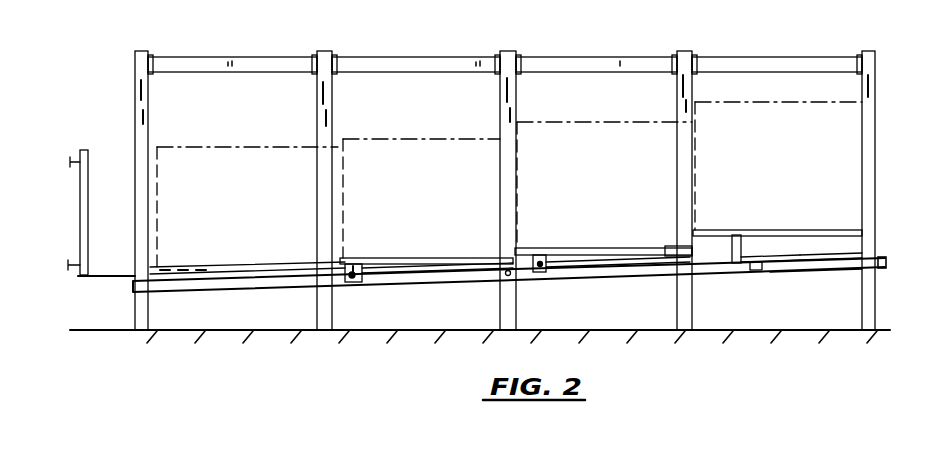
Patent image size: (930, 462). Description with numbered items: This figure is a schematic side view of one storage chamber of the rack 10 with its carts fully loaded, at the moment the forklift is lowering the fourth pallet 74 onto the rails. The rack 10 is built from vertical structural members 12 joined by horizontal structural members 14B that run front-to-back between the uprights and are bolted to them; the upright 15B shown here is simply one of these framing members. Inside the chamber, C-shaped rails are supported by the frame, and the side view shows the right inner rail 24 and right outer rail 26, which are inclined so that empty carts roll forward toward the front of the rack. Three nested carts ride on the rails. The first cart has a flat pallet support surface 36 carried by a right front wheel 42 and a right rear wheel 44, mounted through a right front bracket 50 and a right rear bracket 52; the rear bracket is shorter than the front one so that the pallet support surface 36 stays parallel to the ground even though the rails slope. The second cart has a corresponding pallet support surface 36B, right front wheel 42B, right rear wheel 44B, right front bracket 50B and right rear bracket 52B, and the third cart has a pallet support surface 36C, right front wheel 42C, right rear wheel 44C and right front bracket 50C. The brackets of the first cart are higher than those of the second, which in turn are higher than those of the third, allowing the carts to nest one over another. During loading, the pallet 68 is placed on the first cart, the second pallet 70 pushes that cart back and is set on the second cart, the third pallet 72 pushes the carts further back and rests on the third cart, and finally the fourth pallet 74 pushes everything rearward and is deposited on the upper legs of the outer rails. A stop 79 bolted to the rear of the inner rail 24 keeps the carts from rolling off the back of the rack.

The rack 10 is at (517, 19).
The vertical structural member 12 is at (135, 97).
The horizontal structural member 14B is at (233, 41).
The intermediate post 15B is at (317, 52).
The right inner rail 24 is at (805, 272).
The right outer rail 26 is at (755, 271).
The pallet support surface 36 is at (806, 211).
The pallet support surface 36B is at (592, 226).
The pallet support surface 36C is at (416, 226).
The right front wheel 42 is at (727, 266).
The right front wheel 42B is at (551, 283).
The right front wheel 42C is at (347, 283).
The right rear wheel 44 is at (848, 266).
The right rear wheel 44B is at (650, 282).
The right rear wheel 44C is at (488, 278).
The right front bracket 50 is at (745, 244).
The right front bracket 50B is at (548, 273).
The right front bracket 50C is at (362, 282).
The right rear bracket 52 is at (862, 246).
The right rear bracket 52B is at (668, 249).
The pallet 68 is at (772, 82).
The second pallet 70 is at (612, 95).
The third pallet 72 is at (434, 110).
The fourth pallet 74 is at (241, 128).
The stop 79 is at (886, 263).